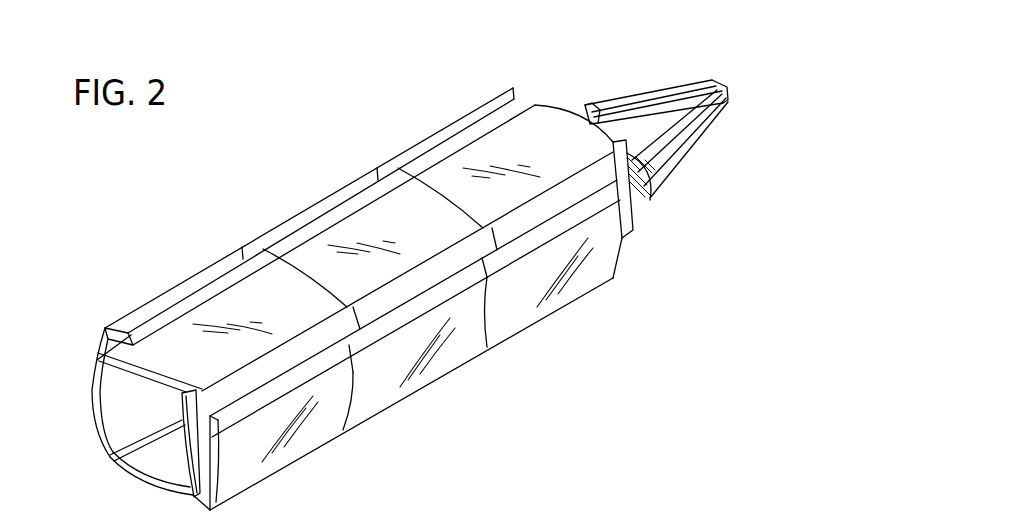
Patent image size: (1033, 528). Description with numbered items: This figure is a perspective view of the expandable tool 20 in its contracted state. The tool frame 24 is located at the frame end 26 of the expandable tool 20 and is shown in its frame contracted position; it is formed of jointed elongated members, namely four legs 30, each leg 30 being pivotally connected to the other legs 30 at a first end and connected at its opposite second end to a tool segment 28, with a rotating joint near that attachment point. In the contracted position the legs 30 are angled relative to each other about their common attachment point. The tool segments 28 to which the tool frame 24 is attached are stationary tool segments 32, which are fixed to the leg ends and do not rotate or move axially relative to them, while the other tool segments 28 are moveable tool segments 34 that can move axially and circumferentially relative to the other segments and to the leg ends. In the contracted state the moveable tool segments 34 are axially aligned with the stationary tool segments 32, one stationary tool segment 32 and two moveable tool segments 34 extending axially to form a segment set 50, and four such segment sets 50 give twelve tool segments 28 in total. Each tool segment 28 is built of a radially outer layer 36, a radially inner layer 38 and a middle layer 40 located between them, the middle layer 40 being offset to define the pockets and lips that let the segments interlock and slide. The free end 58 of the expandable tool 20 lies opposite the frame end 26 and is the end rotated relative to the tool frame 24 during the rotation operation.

The expandable tool 20 is at (194, 221).
The tool frame 24 is at (694, 147).
The frame end 26 is at (532, 102).
The tool segments 28 is at (308, 432).
The legs 30 is at (678, 91).
The stationary tool segments 32 is at (578, 278).
The moveable tool segments 34 is at (433, 372).
The radially outer layer 36 is at (247, 468).
The radially inner layer 38 is at (656, 183).
The middle layer 40 is at (188, 462).
The segment set 50 is at (522, 387).
The free end 58 is at (97, 406).